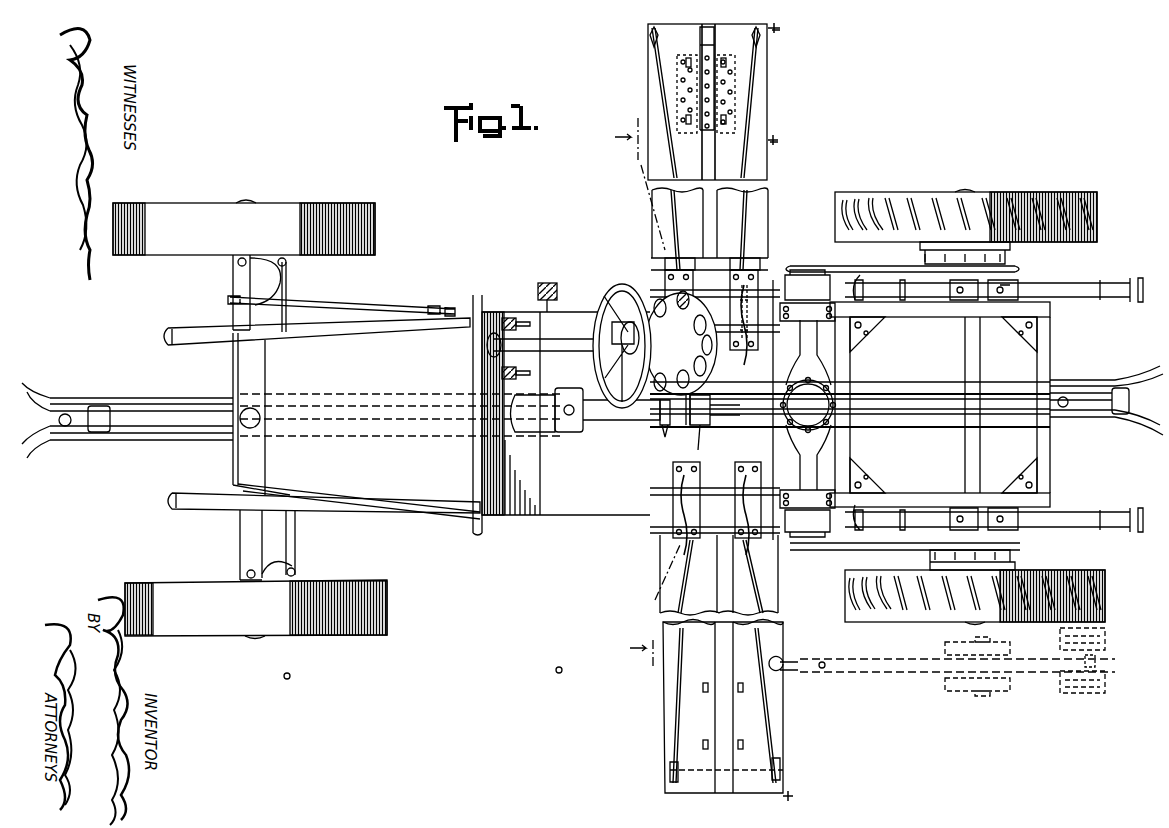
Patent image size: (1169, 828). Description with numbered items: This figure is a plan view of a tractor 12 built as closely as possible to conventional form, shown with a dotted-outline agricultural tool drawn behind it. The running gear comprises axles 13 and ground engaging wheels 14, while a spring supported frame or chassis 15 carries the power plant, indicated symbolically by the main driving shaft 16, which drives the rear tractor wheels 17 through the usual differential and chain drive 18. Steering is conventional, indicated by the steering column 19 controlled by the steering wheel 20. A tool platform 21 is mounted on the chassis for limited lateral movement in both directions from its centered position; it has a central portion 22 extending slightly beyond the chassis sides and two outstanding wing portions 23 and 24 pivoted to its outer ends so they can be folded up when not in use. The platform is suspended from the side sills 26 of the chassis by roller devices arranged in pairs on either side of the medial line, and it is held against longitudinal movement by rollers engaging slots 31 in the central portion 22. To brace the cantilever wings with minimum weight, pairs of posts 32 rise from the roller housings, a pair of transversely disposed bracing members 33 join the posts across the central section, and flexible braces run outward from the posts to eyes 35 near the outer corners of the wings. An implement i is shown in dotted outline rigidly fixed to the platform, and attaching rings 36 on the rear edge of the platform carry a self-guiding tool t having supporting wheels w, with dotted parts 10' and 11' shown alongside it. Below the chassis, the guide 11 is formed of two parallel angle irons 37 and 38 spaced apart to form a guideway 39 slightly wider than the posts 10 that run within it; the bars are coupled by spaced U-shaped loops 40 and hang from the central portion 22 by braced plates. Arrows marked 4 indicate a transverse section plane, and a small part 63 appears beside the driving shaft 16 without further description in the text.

The section line 4- 4 is at (638, 122).
The posts 10 is at (567, 430).
The spindle pin (alternative position) 10' is at (712, 657).
The guide 11 is at (617, 412).
The axle (alternative position) 11' is at (957, 683).
The tractor 12 is at (432, 478).
The axles 13 is at (235, 530).
The ground engaging wheels 14 is at (375, 222).
The frame or chassis 15 is at (903, 317).
The main driving shaft 16 is at (697, 422).
The rear tractor wheels 17 is at (1030, 192).
The differential and chain drive 18 is at (800, 268).
The steering column 19 is at (520, 350).
The steering wheel 20 is at (615, 292).
The tool platform 21 is at (778, 580).
The central portion 22 is at (660, 440).
The wing portion 23 is at (714, 278).
The wing portion 24 is at (723, 707).
The side sills 26 is at (920, 345).
The slots 31 is at (760, 270).
The posts 32 is at (780, 470).
The transversely disposed bracing members 33 is at (790, 432).
The eyes 35 is at (770, 32).
The attaching rings 36 is at (806, 748).
The angle iron 37 is at (160, 403).
The angle iron 38 is at (160, 440).
The guideway 39 is at (1085, 390).
The U-shaped loops 40 is at (105, 408).
The gear shift lever 63 is at (668, 440).
The agricultural implement i is at (735, 95).
The self-guiding tool t is at (1030, 660).
The supporting wheels w is at (1008, 688).